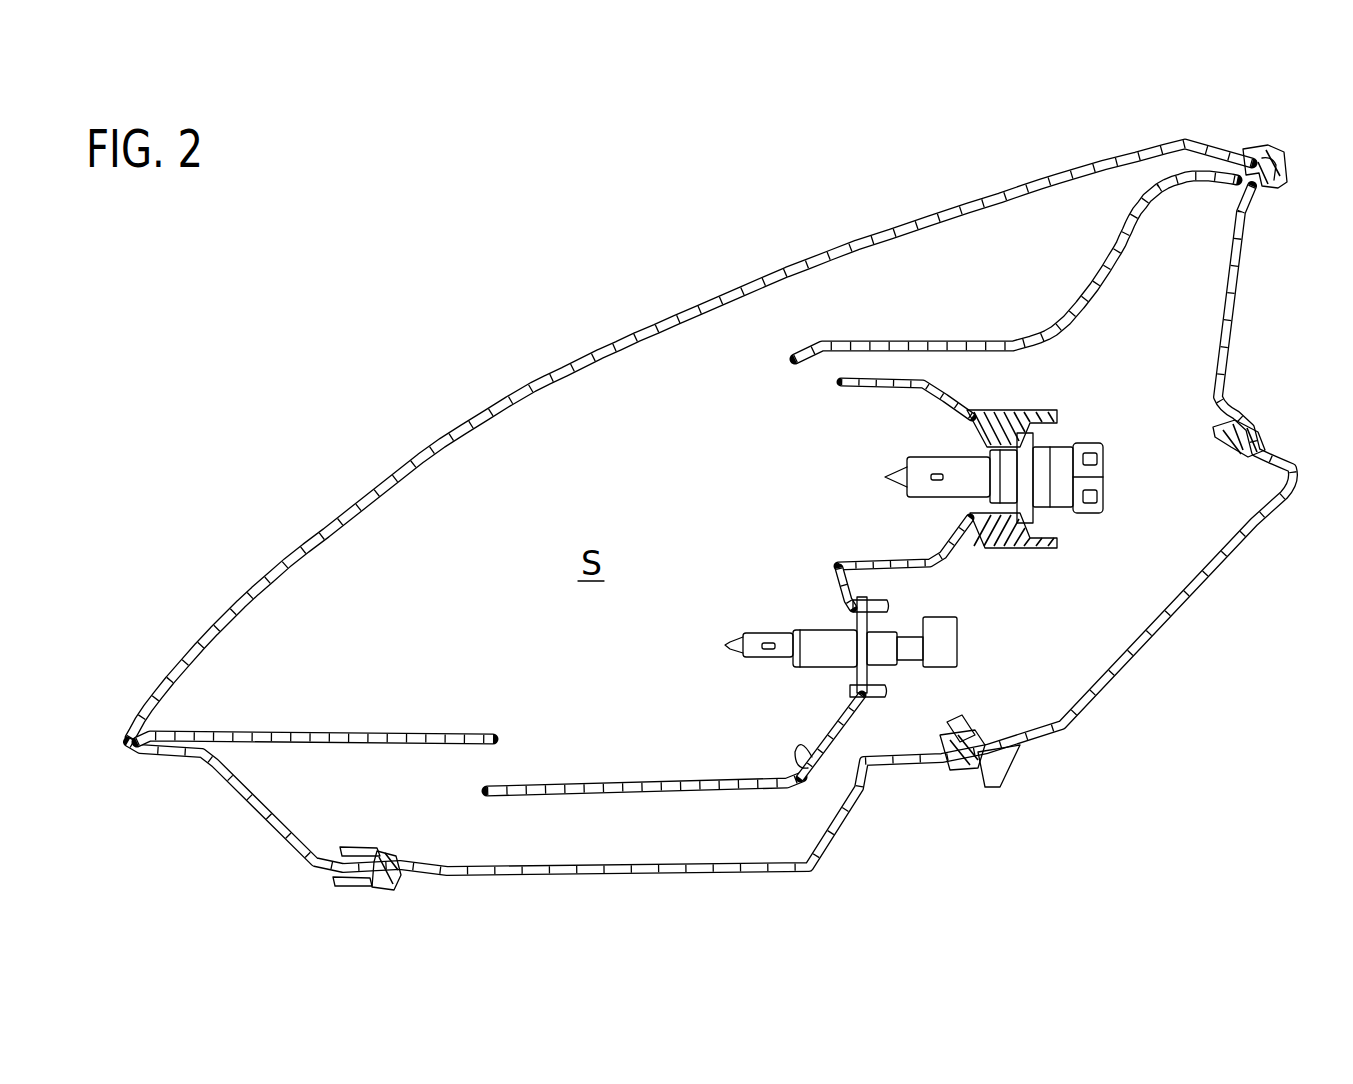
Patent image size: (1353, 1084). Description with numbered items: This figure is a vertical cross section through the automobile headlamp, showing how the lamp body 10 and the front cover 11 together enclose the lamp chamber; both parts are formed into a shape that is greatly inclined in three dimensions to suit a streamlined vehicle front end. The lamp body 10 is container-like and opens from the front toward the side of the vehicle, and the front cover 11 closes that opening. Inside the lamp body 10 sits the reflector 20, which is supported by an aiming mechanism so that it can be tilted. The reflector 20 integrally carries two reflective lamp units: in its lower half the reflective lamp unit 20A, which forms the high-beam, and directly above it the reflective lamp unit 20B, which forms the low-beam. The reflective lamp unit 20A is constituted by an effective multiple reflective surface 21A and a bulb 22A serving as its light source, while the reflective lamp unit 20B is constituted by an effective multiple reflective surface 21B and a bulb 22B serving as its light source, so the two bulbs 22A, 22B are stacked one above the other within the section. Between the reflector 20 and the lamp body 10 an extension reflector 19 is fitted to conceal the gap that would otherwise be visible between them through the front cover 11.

The lamp body 10 is at (1240, 310).
The front cover 11 is at (531, 388).
The extension reflector 19 is at (800, 343).
The reflector 20 is at (913, 573).
The reflective lamp unit 20A is at (847, 720).
The reflective lamp unit 20B is at (884, 372).
The effective multiple reflective surface 21A is at (812, 757).
The effective multiple reflective surface 21B is at (945, 548).
The bulb 22A is at (757, 660).
The bulb 22B is at (932, 445).